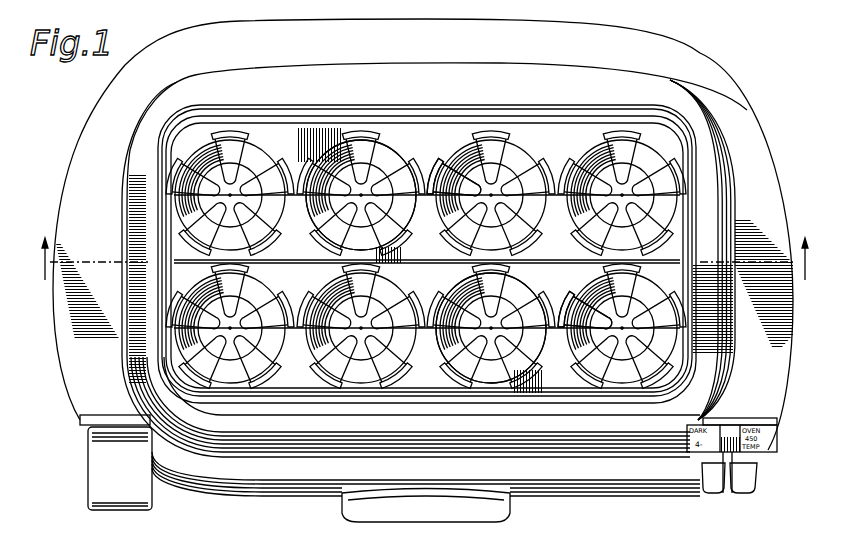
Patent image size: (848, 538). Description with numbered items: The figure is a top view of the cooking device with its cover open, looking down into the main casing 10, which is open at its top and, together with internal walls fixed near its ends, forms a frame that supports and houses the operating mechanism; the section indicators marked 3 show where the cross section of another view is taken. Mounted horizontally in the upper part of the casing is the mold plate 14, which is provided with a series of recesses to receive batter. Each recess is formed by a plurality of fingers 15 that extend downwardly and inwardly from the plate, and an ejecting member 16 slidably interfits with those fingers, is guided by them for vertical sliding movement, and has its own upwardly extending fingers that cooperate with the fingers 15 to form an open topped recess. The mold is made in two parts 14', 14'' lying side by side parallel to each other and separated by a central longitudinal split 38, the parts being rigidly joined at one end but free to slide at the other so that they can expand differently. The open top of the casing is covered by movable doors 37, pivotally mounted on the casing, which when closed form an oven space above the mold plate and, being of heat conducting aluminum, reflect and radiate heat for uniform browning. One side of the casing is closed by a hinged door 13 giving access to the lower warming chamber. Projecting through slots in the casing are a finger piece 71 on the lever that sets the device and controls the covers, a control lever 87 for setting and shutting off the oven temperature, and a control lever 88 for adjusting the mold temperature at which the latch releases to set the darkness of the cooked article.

The main casing 10 is at (678, 50).
The movable doors 37 is at (490, 78).
The mold plate 14 is at (499, 170).
The mold plate part 14' is at (360, 170).
The mold plate part 14'' is at (360, 350).
The ejecting member 16 is at (440, 180).
The fingers 15 is at (406, 212).
The central longitudinal split 38 is at (553, 259).
The hinged door 13 is at (266, 493).
The finger piece 71 is at (103, 482).
The control lever 87 is at (747, 478).
The control lever 88 is at (720, 490).
The section line 3- 3 is at (423, 259).